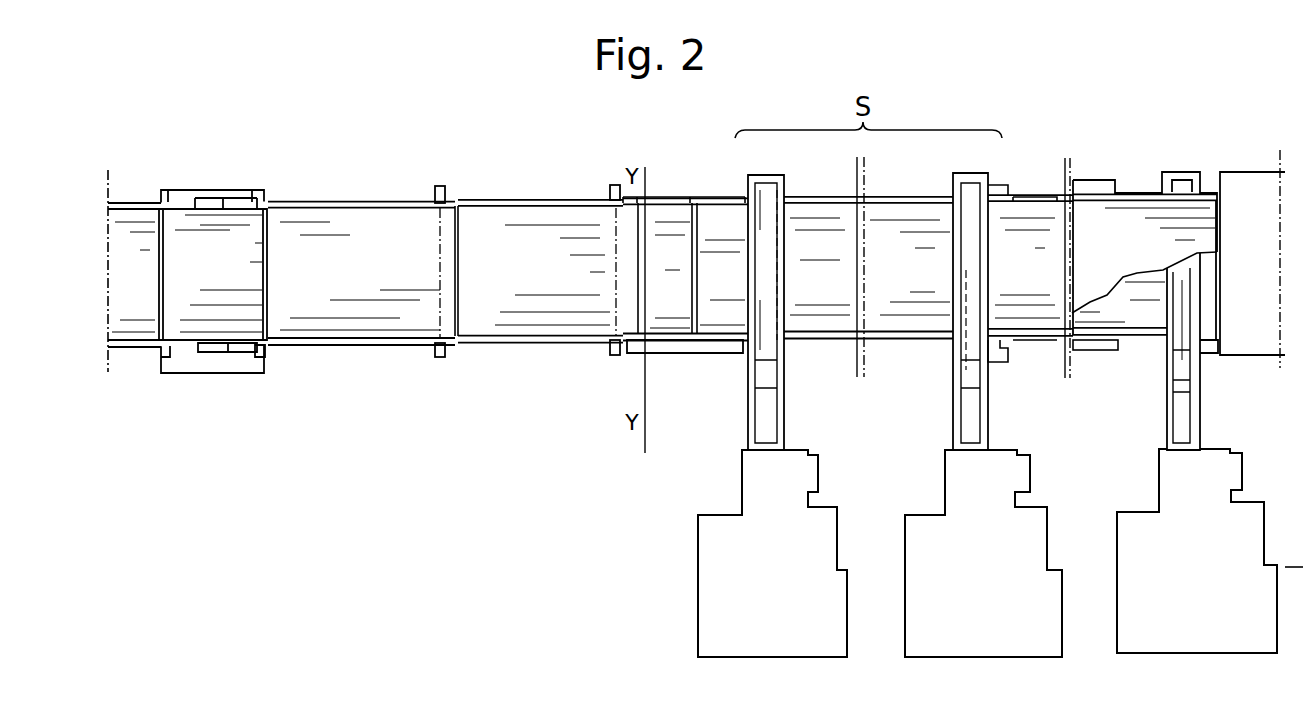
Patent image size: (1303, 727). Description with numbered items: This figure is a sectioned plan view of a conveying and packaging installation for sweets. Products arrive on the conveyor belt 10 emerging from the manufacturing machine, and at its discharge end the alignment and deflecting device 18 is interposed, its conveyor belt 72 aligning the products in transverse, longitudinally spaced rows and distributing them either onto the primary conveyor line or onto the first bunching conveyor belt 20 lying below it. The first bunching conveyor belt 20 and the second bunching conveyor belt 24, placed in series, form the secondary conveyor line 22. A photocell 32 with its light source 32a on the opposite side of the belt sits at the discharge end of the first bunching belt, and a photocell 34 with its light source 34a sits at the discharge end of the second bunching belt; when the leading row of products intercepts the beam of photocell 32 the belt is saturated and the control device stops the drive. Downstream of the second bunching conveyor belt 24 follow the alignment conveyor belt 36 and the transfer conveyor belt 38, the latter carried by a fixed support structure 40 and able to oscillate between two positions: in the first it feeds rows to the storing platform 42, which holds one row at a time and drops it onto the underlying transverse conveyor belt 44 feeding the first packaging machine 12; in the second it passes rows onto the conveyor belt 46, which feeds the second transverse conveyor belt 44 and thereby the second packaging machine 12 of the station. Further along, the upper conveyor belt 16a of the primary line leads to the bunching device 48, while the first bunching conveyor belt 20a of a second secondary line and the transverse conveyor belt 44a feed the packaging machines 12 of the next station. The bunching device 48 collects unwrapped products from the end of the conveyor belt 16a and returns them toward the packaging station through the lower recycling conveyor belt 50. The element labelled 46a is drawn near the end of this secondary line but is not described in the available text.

The conveyor belt 10 is at (140, 312).
The packaging machine 12 is at (713, 550).
The conveyor belt 16a is at (1128, 225).
The alignment and deflecting device 18 is at (226, 400).
The first bunching conveyor belt 20 is at (378, 228).
The first bunching conveyor belt 20a is at (1020, 232).
The secondary conveyor line 22 is at (406, 186).
The second bunching conveyor belt 24 is at (542, 238).
The photocell 32 is at (443, 360).
The light source 32a is at (444, 192).
The photocell 34 is at (612, 360).
The light source 34a is at (612, 184).
The alignment conveyor belt 36 is at (665, 228).
The transfer conveyor belt 38 is at (723, 222).
The fixed support structure 40 is at (646, 356).
The storing platform 42 is at (772, 257).
The transverse conveyor belt 44 is at (760, 373).
The transverse conveyor belt 44a is at (1182, 362).
The conveyor belt 46 is at (908, 235).
The end rail plate 46a is at (1145, 305).
The bunching device 48 is at (1245, 205).
The lower recycling conveyor belt 50 is at (1207, 310).
The conveyor belt 72 is at (208, 232).